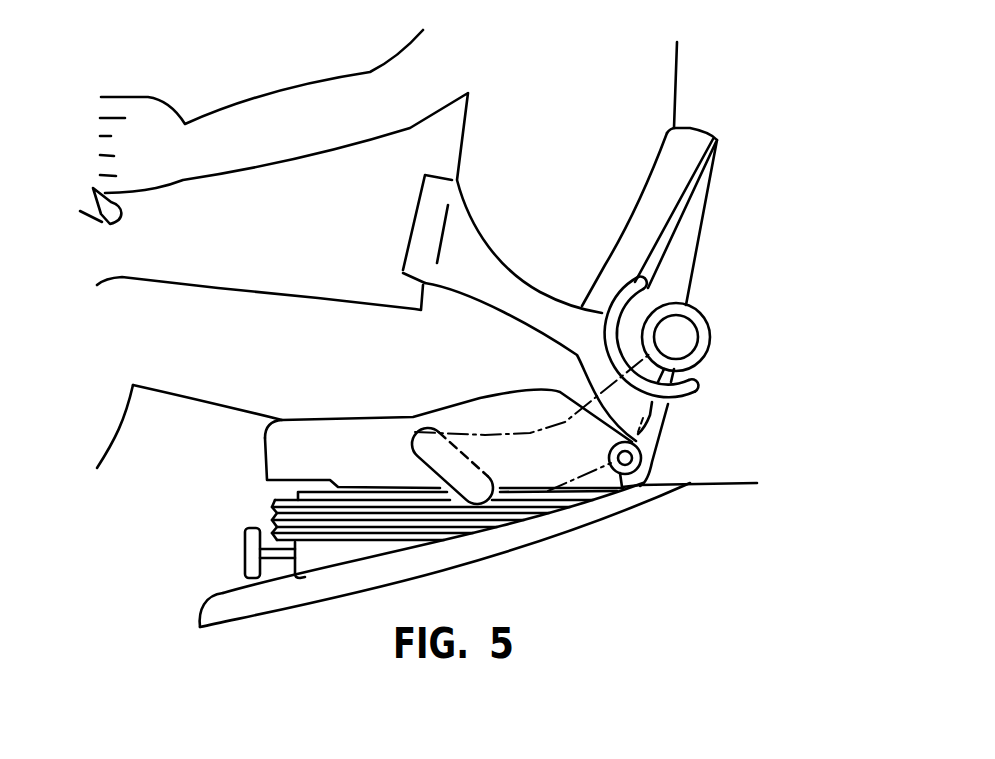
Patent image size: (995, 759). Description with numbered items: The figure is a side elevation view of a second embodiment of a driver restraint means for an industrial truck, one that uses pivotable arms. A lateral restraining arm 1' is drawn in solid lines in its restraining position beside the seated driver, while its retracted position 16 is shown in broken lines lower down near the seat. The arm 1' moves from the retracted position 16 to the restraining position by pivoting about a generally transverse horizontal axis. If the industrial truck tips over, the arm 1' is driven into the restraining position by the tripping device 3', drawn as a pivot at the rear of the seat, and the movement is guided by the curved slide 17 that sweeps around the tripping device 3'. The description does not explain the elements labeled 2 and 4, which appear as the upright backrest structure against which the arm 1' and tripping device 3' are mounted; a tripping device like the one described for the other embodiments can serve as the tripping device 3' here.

The lateral restraining arm 1' is at (497, 308).
The backrest 2 is at (652, 95).
The tripping device 3' is at (676, 336).
The backrest frame 4 is at (685, 148).
The retracted position 16 is at (452, 432).
The curved slide 17 is at (683, 403).